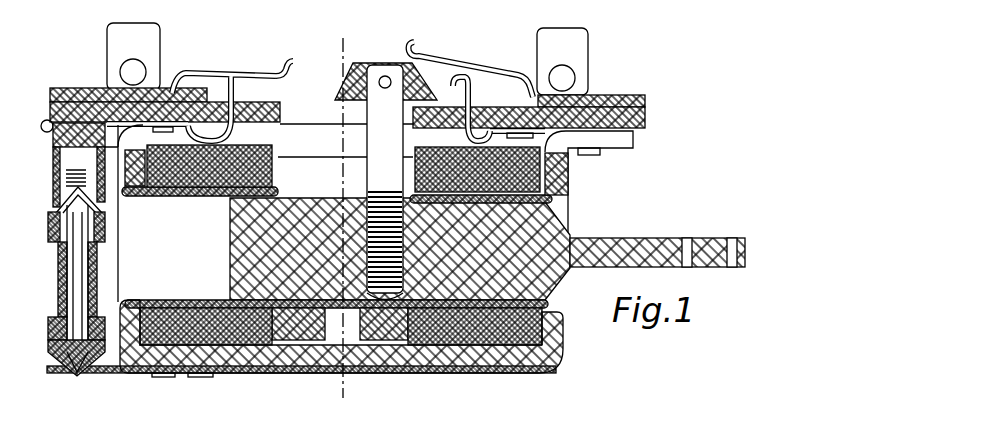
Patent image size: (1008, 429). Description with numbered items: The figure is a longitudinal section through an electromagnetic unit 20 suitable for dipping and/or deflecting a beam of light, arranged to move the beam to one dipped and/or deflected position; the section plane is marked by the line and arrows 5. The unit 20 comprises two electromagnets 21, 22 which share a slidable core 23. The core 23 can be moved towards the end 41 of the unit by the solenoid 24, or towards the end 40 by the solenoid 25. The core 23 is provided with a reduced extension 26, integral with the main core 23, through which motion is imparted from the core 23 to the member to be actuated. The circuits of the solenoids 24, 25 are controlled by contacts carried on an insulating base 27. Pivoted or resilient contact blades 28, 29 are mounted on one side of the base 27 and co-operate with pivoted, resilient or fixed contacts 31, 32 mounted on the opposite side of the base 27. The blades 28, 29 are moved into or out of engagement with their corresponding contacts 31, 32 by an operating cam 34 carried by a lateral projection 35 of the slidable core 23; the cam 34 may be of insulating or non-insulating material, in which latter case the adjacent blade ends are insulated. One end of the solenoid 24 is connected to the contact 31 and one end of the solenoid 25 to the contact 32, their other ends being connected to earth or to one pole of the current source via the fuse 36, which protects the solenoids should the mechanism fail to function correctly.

The electromagnetic unit 20 is at (566, 334).
The electromagnet 21 is at (505, 362).
The electromagnet 22 is at (245, 360).
The slidable core 23 is at (229, 252).
The solenoid 24 is at (487, 343).
The solenoid 25 is at (196, 312).
The reduced extension 26 is at (655, 241).
The insulating base 27 is at (645, 122).
The contact blade 28 is at (477, 72).
The contact blade 29 is at (294, 67).
The contact 31 is at (465, 97).
The contact 32 is at (240, 88).
The operating cam 34 is at (344, 82).
The lateral projection 35 is at (385, 182).
The fuse 36 is at (58, 286).
The end of the unit 40 is at (119, 280).
The end of the unit 41 is at (566, 288).
The section line 5- 5 is at (320, 30).